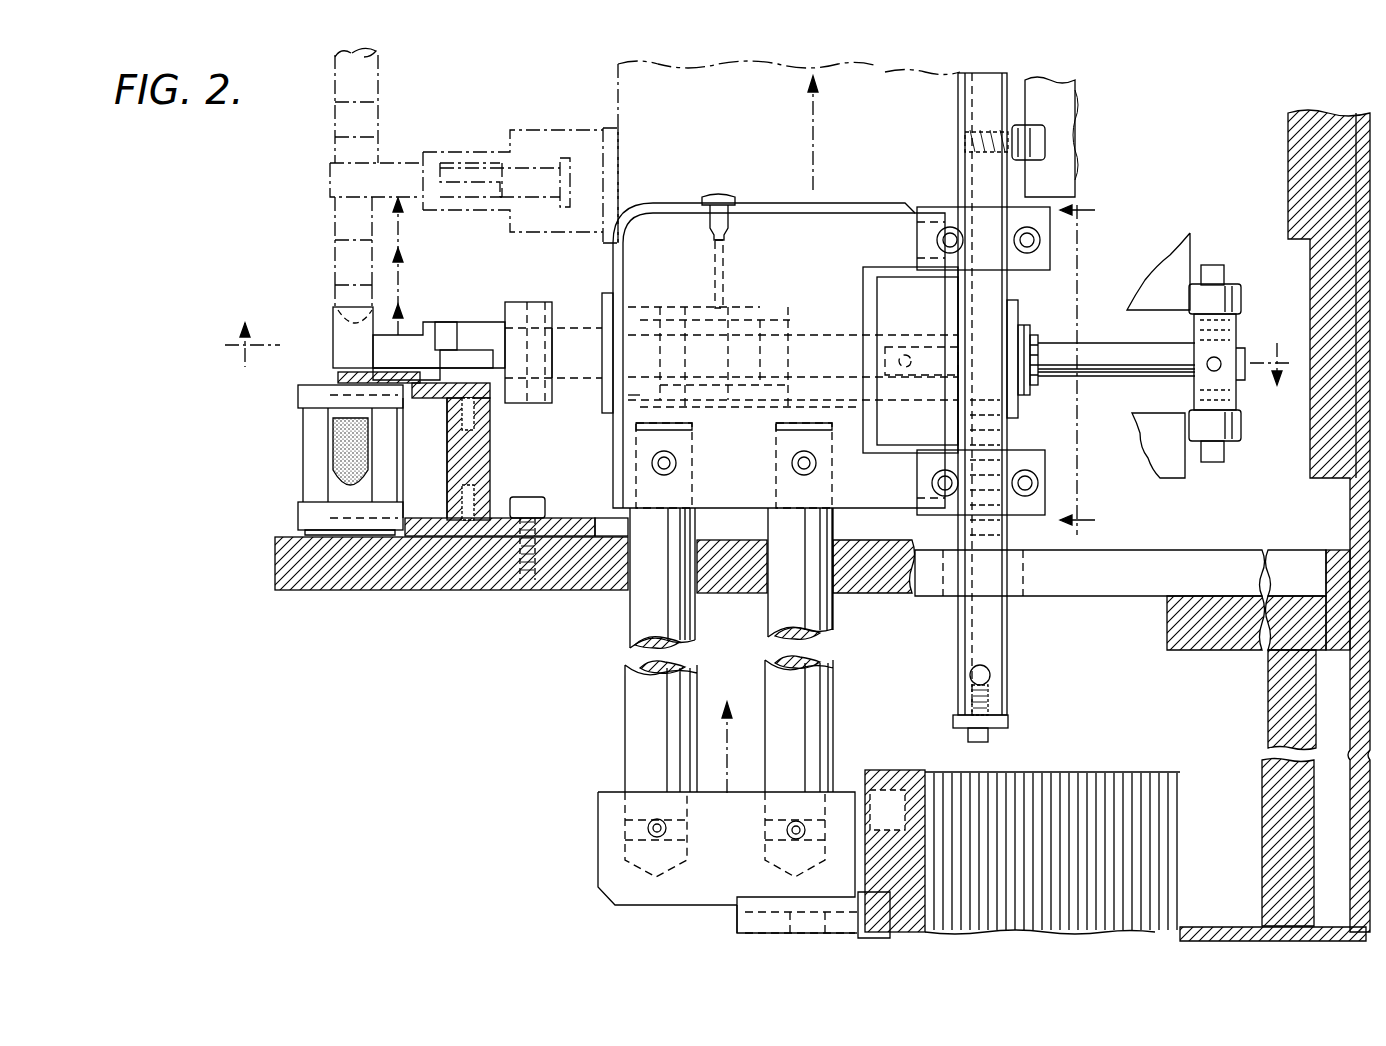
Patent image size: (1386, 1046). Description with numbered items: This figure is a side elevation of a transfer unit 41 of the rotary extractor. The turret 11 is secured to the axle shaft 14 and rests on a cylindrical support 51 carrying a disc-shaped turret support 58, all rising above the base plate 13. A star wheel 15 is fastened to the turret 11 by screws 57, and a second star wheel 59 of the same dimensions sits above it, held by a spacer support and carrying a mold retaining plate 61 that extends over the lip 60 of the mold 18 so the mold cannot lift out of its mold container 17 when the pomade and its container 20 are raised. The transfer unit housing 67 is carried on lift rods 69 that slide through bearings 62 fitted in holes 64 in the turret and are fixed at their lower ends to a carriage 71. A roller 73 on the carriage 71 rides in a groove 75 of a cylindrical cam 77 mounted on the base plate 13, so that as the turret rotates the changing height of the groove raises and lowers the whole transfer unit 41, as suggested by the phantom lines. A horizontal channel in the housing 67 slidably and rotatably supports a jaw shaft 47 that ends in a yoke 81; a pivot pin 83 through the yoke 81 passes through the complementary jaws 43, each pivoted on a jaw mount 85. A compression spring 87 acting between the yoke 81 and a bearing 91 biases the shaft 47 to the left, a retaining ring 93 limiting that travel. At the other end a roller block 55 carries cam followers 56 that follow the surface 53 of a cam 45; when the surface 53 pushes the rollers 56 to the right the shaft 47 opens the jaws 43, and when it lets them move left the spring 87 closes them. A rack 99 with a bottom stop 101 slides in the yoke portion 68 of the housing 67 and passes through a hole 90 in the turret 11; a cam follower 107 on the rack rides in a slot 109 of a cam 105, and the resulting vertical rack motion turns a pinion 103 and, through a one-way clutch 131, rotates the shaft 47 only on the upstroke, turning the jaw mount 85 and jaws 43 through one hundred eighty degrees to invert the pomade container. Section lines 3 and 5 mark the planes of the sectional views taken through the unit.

The turret 11 is at (588, 578).
The base plate 13 is at (1234, 927).
The axle shaft 14 is at (1370, 114).
The star wheel 15 is at (552, 518).
The mold container 17 is at (298, 434).
The mold 18 is at (340, 472).
The container 20 is at (335, 320).
The section line 3 is at (759, 354).
The section line 5 is at (1068, 363).
The transfer unit 41 is at (1100, 160).
The jaws 43 is at (333, 345).
The cam 45 is at (1180, 299).
The jaw shaft 47 is at (1133, 366).
The cylindrical support 51 is at (1268, 680).
The cam surface 53 is at (1186, 252).
The roller block 55 is at (1236, 345).
The cam followers 56 is at (1241, 305).
The screws 57 is at (528, 496).
The turret support 58 is at (1235, 636).
The second star wheel 59 is at (425, 398).
The lip 60 is at (333, 381).
The mold retaining plate 61 is at (407, 353).
The bearings 62 is at (696, 602).
The holes 64 is at (700, 545).
The transfer unit housing 67 is at (818, 262).
The yoke portion 68 is at (1050, 246).
The lift rods 69 is at (696, 668).
The carriage 71 is at (735, 866).
The roller 73 is at (858, 914).
The groove 75 is at (870, 892).
The cylindrical cam 77 is at (923, 750).
The yoke 81 is at (494, 322).
The pivot pin 83 is at (462, 322).
The jaw mount 85 is at (602, 305).
The compression spring 87 is at (618, 413).
The hole 90 is at (1010, 600).
The bearing 91 is at (706, 408).
The retaining ring 93 is at (1028, 387).
The rack 99 is at (1012, 672).
The bottom stop 101 is at (1006, 724).
The pinion 103 is at (1013, 314).
The cam 105 is at (1078, 116).
The cam follower 107 is at (965, 119).
The slot 109 is at (1030, 161).
The one-way clutch 131 is at (1028, 334).